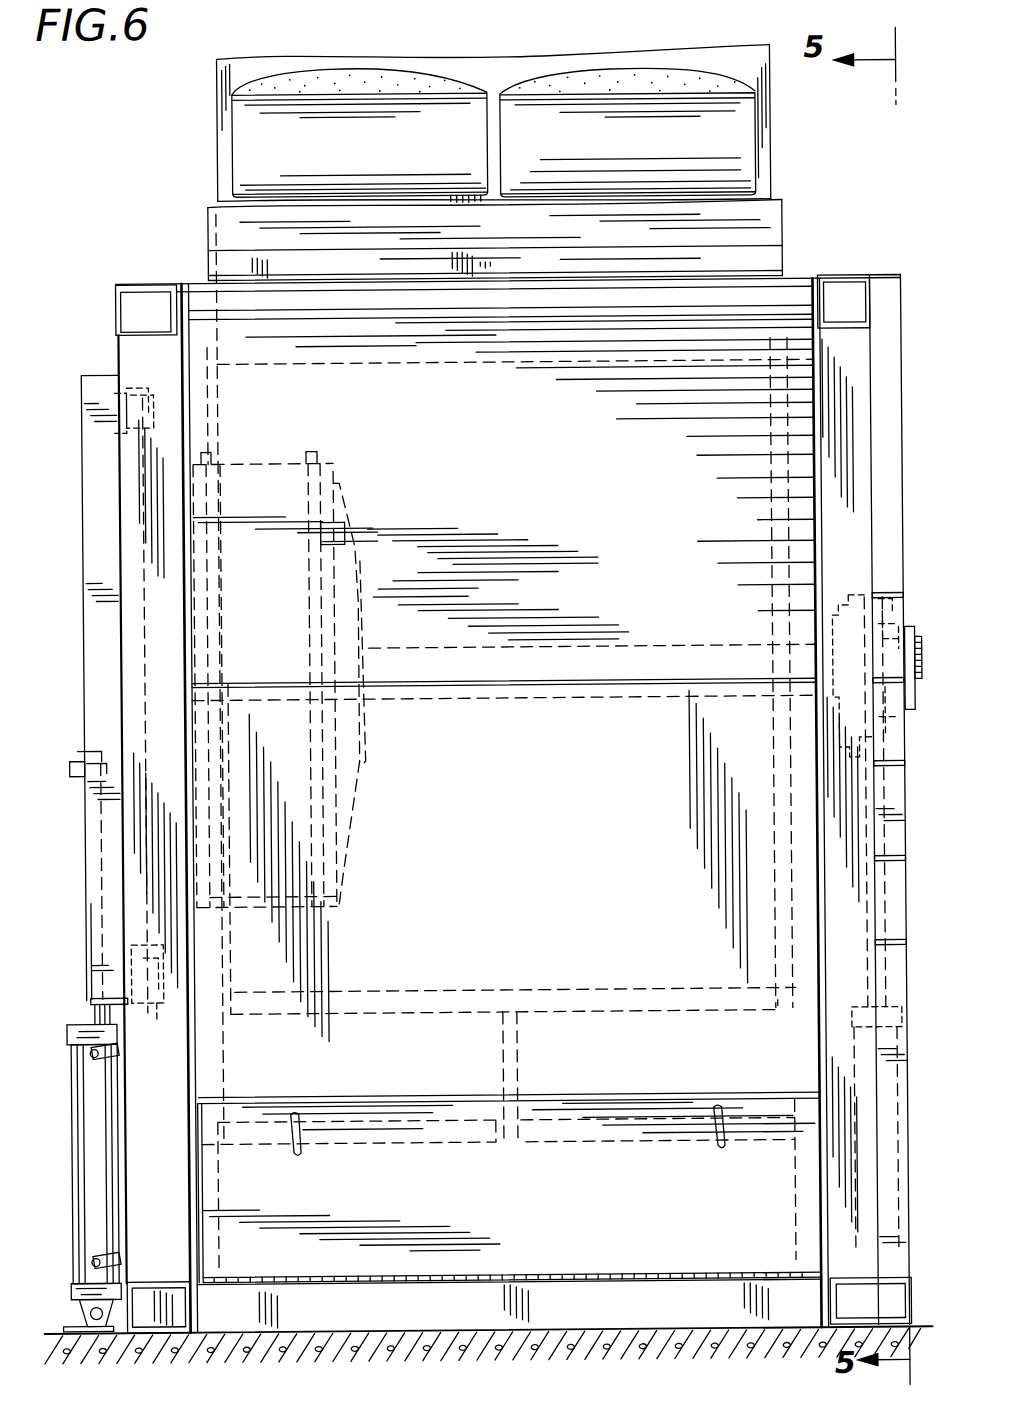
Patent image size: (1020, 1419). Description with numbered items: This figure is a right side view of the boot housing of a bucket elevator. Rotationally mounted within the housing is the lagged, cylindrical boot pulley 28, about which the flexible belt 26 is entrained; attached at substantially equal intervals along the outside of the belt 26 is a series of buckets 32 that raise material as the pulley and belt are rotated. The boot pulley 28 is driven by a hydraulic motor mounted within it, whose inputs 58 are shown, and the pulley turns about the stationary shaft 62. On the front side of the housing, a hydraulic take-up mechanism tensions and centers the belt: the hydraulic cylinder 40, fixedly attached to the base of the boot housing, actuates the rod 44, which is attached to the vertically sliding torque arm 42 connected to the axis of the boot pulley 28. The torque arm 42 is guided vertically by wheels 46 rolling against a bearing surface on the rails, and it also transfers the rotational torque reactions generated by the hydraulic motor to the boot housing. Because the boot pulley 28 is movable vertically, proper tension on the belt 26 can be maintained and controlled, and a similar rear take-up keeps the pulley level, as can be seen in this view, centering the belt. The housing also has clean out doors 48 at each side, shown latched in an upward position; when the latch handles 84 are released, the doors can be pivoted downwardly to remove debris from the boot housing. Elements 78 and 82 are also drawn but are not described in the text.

The flexible belt 26 is at (779, 155).
The boot pulley 28 is at (781, 1004).
The buckets 32 is at (371, 154).
The hydraulic cylinder 40 is at (75, 1146).
The torque arm 42 is at (91, 666).
The rod 44 is at (91, 916).
The wheels 46 is at (154, 392).
The clean out doors 48 is at (577, 1203).
The inputs to the hydraulic motor 58 is at (281, 663).
The stationary shaft 62 is at (660, 650).
The bracket 78 is at (891, 864).
The rod 82 is at (883, 961).
The latch handles 84 is at (299, 1153).